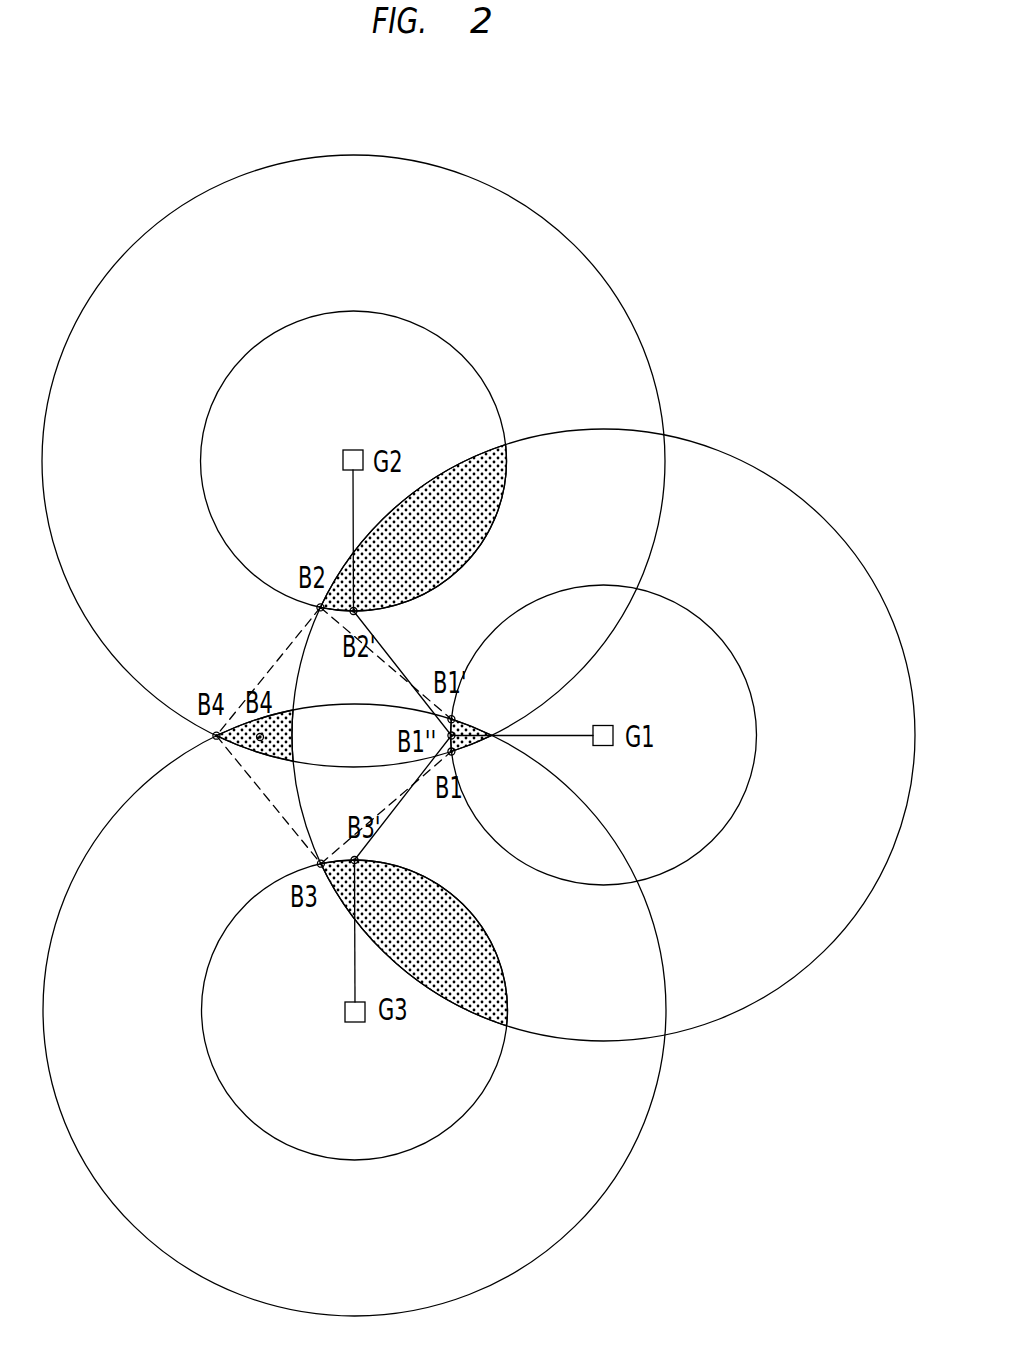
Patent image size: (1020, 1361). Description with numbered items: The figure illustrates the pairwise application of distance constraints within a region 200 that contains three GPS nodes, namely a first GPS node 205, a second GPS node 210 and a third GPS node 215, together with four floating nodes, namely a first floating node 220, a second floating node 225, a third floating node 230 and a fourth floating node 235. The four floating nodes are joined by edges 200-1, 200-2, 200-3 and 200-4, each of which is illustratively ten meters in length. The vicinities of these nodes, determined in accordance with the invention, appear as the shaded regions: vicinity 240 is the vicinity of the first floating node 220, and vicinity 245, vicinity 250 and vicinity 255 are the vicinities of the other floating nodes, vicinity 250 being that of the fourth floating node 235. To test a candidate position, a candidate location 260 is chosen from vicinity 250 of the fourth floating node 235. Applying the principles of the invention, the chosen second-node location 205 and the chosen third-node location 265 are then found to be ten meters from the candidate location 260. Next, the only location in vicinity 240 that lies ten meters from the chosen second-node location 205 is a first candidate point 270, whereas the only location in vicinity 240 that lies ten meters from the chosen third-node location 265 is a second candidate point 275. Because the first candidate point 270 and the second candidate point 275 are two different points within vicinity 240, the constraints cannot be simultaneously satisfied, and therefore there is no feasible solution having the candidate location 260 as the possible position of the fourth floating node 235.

The region 200 is at (702, 237).
The GPS node G1 205 is at (612, 726).
The GPS node G2 210 is at (363, 452).
The GPS node G3 215 is at (351, 1022).
The floating node B1 220 is at (458, 732).
The floating node B2 225 is at (358, 612).
The floating node B3 230 is at (360, 860).
The floating node B4 235 is at (258, 742).
The vicinity of node B1 240 is at (470, 742).
The vicinity 245 is at (490, 524).
The vicinity of B4 250 is at (293, 740).
The vicinity 255 is at (487, 930).
The location B'4 260 is at (213, 736).
The location B'3 265 is at (318, 865).
The location B'1 270 is at (457, 710).
The location B''1 275 is at (457, 760).
The edge 200-1 is at (292, 674).
The edge 200-2 is at (414, 682).
The edge 200-3 is at (414, 792).
The edge 200-4 is at (290, 784).